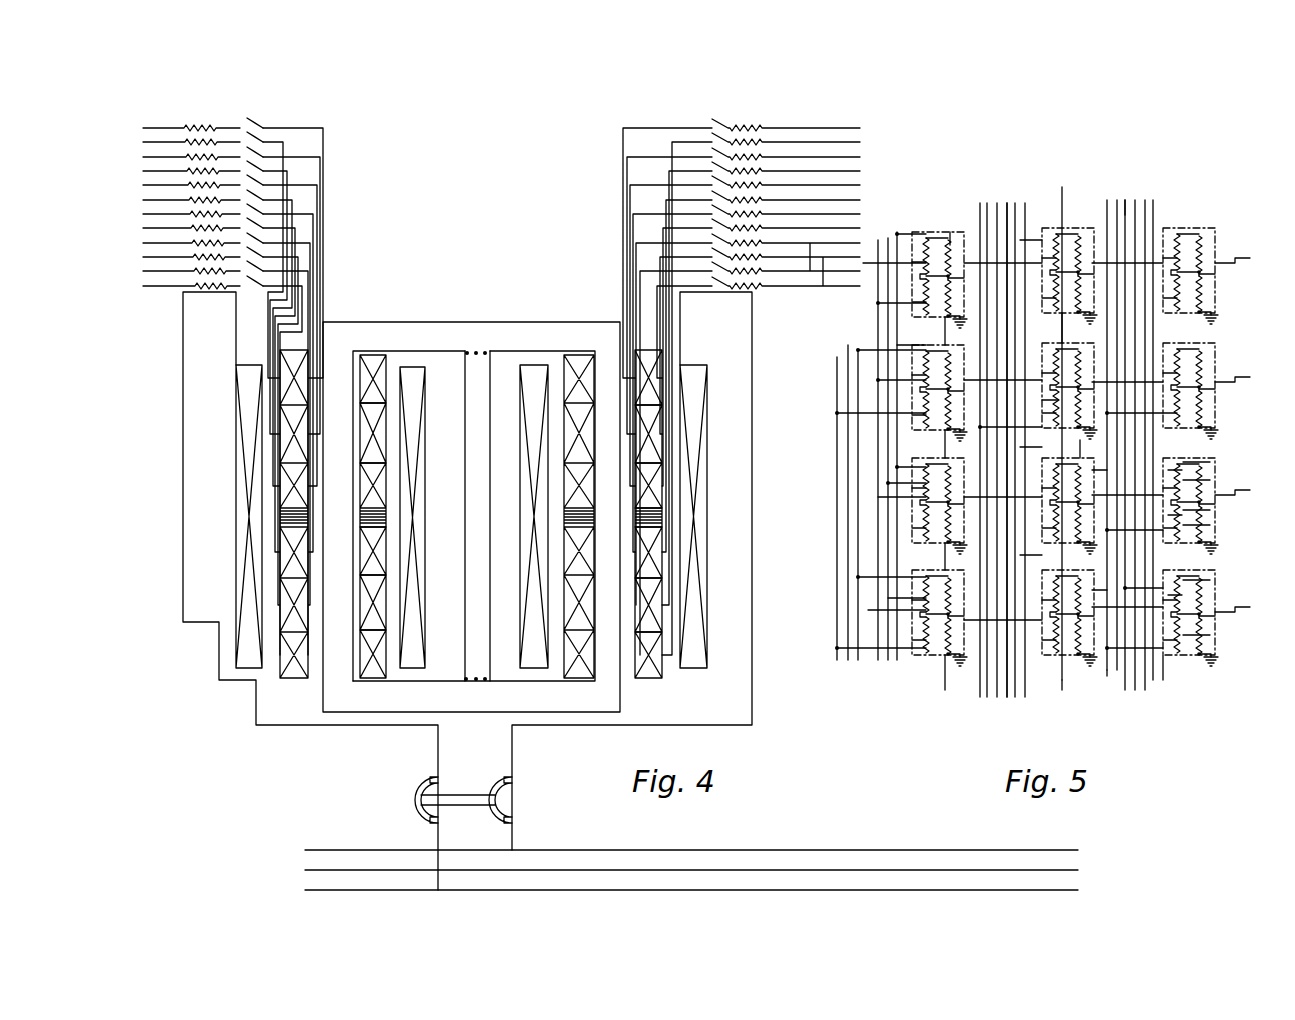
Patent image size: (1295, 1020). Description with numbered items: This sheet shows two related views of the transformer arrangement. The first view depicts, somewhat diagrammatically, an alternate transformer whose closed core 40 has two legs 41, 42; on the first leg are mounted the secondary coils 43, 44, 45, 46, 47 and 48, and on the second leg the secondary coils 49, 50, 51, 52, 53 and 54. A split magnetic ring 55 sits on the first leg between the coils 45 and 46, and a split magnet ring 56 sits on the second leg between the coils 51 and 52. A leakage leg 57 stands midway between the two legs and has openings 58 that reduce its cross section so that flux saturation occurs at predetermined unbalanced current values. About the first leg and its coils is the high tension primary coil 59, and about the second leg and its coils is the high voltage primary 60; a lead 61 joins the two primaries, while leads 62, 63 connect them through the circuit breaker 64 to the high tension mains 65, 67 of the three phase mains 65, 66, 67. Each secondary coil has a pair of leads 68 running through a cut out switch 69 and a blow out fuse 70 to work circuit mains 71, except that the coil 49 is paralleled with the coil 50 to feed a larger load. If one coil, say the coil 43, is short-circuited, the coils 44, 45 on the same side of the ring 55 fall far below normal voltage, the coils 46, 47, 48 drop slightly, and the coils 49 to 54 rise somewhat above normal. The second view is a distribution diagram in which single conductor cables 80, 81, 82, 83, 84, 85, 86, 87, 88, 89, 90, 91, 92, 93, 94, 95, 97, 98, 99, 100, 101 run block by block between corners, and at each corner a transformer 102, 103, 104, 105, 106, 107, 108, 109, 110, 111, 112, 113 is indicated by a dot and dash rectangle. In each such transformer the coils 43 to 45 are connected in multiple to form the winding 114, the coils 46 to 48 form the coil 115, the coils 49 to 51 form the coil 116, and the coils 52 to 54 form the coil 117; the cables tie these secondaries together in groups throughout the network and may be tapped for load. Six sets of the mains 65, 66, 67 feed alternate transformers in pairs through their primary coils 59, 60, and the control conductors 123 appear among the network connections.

In FIG. 4, the closed core 40 is at (393, 322).
In FIG. 4, the leg 41 is at (335, 681).
In FIG. 4, the leg 42 is at (620, 681).
In FIG. 4, the secondary coil 43 is at (386, 362).
In FIG. 4, the secondary coil 44 is at (387, 440).
In FIG. 4, the secondary coil 45 is at (387, 505).
In FIG. 4, the secondary coil 46 is at (387, 557).
In FIG. 4, the secondary coil 47 is at (387, 618).
In FIG. 4, the secondary coil 48 is at (372, 678).
In FIG. 4, the secondary coil 49 is at (643, 355).
In FIG. 4, the secondary coil 50 is at (656, 437).
In FIG. 4, the secondary coil 51 is at (656, 488).
In FIG. 4, the secondary coil 52 is at (660, 556).
In FIG. 4, the secondary coil 53 is at (660, 604).
In FIG. 4, the secondary coil 54 is at (670, 664).
In FIG. 4, the split magnetic ring 55 is at (285, 520).
In FIG. 4, the split magnet ring 56 is at (660, 517).
In FIG. 4, the leakage leg 57 is at (470, 476).
In FIG. 4, the openings 58 is at (467, 351).
In FIG. 4, the high tension primary coil 59 is at (236, 585).
In FIG. 5, the high tension primary coil 59 is at (930, 250).
In FIG. 4, the high voltage primary 60 is at (707, 640).
In FIG. 5, the high voltage primary 60 is at (930, 293).
In FIG. 4, the lead 61 is at (441, 672).
In FIG. 4, the lead 62 is at (183, 560).
In FIG. 4, the lead 63 is at (752, 664).
In FIG. 4, the circuit breaker 64 is at (474, 803).
In FIG. 4, the high tension main 65 is at (388, 850).
In FIG. 5, the high tension main 65 is at (1138, 200).
In FIG. 4, the high tension main 66 is at (396, 870).
In FIG. 5, the high tension main 66 is at (1148, 200).
In FIG. 4, the high tension main 67 is at (400, 890).
In FIG. 5, the high tension main 67 is at (1117, 200).
In FIG. 4, the leads 68 is at (316, 213).
In FIG. 4, the cut out switch 69 is at (258, 119).
In FIG. 4, the blow out fuse 70 is at (190, 258).
In FIG. 4, the work circuit mains 71 is at (150, 216).
In FIG. 5, the conductor 80 is at (935, 232).
In FIG. 5, the conductor 81 is at (1045, 260).
In FIG. 5, the conductor 82 is at (945, 322).
In FIG. 5, the conductor 83 is at (866, 265).
In FIG. 5, the conductor 84 is at (1045, 360).
In FIG. 5, the conductor 85 is at (945, 445).
In FIG. 5, the conductor 86 is at (905, 380).
In FIG. 5, the conductor 87 is at (1050, 505).
In FIG. 5, the conductor 88 is at (945, 552).
In FIG. 5, the conductor 89 is at (872, 498).
In FIG. 5, the conductor 90 is at (1048, 622).
In FIG. 5, the conductor 91 is at (945, 685).
In FIG. 5, the conductor 92 is at (873, 610).
In FIG. 5, the conductor 93 is at (1062, 195).
In FIG. 5, the conductor 94 is at (1132, 330).
In FIG. 5, the conductor 95 is at (1062, 326).
In FIG. 5, the conductor 97 is at (1058, 444).
In FIG. 5, the conductor 98 is at (1100, 495).
In FIG. 5, the conductor 99 is at (1062, 555).
In FIG. 5, the conductor 100 is at (1102, 605).
In FIG. 5, the conductor 101 is at (1062, 686).
In FIG. 5, the transformer 102 is at (950, 230).
In FIG. 5, the transformer 103 is at (918, 345).
In FIG. 5, the transformer 104 is at (922, 515).
In FIG. 5, the transformer 105 is at (915, 656).
In FIG. 5, the transformer 106 is at (1035, 238).
In FIG. 5, the transformer 107 is at (1061, 396).
In FIG. 5, the transformer 108 is at (1080, 466).
In FIG. 5, the transformer 109 is at (1097, 648).
In FIG. 5, the transformer 110 is at (1188, 228).
In FIG. 5, the transformer 111 is at (1190, 432).
In FIG. 5, the transformer 112 is at (1195, 545).
In FIG. 5, the transformer 113 is at (1205, 598).
In FIG. 5, the winding 114 is at (1220, 580).
In FIG. 5, the coil 115 is at (1220, 480).
In FIG. 5, the coil 116 is at (1220, 510).
In FIG. 5, the coil 117 is at (1220, 636).
In FIG. 5, the control conductors 123 is at (897, 240).